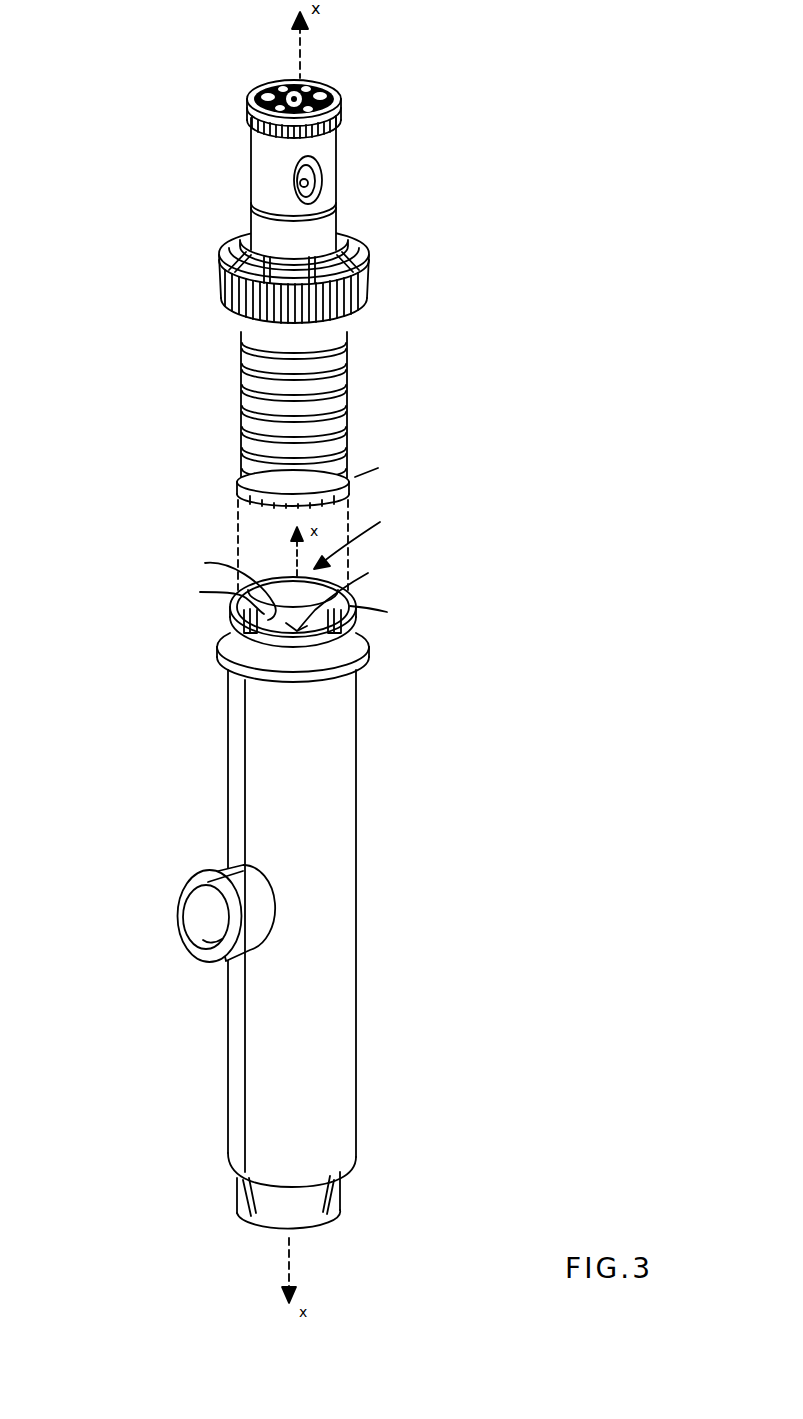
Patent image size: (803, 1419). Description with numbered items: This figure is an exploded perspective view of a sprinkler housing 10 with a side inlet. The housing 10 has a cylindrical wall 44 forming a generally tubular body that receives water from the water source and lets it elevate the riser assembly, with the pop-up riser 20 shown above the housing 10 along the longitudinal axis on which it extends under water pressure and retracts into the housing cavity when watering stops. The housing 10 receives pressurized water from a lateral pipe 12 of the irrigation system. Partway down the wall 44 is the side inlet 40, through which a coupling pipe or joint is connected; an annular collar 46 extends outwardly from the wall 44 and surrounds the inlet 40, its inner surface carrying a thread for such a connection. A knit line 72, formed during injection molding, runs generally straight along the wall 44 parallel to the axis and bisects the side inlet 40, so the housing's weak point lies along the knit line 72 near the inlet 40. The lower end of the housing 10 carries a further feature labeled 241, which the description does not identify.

The sprinkler housing 10 is at (313, 923).
The lateral pipe 12 is at (172, 350).
The pop-up riser 20 is at (222, 176).
The cylindrical wall 44 is at (337, 727).
The annular collar 46 is at (198, 872).
The knit line 72 is at (245, 770).
The side inlet 40 is at (204, 926).
The bottom inlet 241 is at (322, 1239).